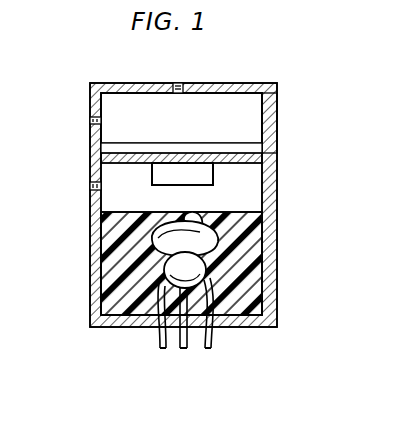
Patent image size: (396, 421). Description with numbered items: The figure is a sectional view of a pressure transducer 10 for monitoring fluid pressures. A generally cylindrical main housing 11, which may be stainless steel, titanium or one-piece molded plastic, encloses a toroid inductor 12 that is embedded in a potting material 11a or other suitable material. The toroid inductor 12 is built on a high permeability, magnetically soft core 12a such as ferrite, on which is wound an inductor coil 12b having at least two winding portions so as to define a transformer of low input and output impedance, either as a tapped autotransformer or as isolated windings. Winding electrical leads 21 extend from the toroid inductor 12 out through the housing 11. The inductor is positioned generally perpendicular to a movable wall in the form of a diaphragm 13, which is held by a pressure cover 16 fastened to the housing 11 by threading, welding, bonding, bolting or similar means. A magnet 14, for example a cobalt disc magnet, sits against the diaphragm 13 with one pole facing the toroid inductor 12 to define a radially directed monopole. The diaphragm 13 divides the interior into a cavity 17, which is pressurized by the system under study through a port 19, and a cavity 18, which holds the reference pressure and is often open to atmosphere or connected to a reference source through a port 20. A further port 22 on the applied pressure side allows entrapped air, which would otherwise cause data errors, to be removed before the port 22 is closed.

The pressure transducer 10 is at (82, 162).
The main housing 11 is at (265, 326).
The potting material 11a is at (250, 292).
The toroid inductor 12 is at (241, 284).
The core 12a is at (240, 226).
The inductor coil 12b is at (222, 262).
The diaphragm 13 is at (140, 170).
The magnet 14 is at (212, 167).
The pressure cover 16 is at (270, 113).
The cavity 17 is at (214, 124).
The cavity 18 is at (113, 206).
The port 19 is at (179, 83).
The port 20 is at (90, 186).
The winding electrical leads 21 is at (166, 350).
The port 22 is at (90, 120).